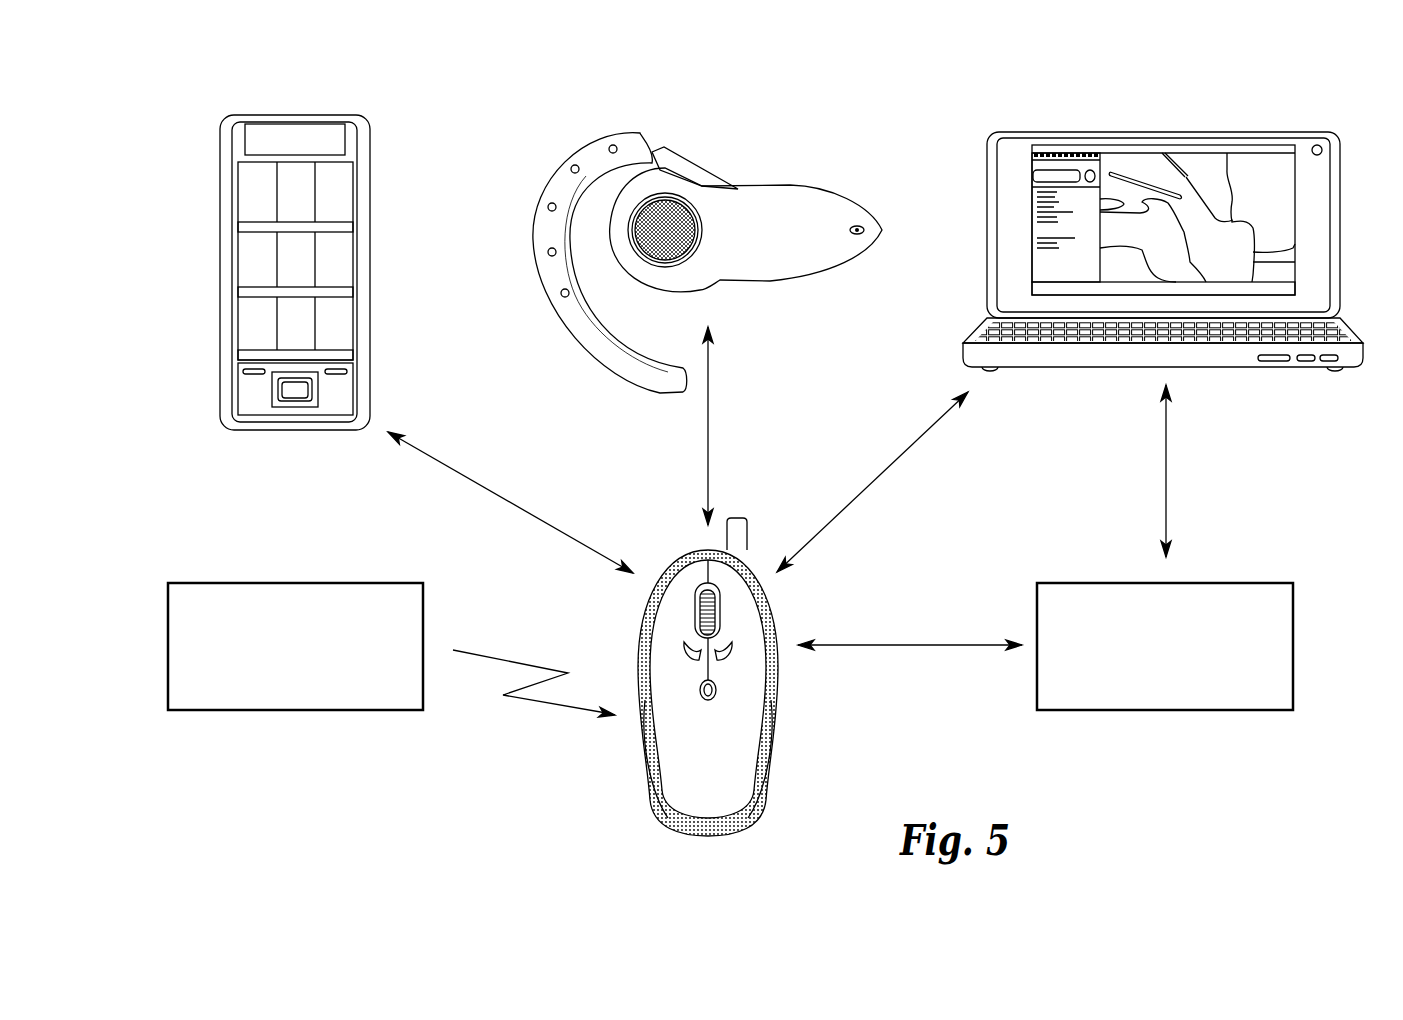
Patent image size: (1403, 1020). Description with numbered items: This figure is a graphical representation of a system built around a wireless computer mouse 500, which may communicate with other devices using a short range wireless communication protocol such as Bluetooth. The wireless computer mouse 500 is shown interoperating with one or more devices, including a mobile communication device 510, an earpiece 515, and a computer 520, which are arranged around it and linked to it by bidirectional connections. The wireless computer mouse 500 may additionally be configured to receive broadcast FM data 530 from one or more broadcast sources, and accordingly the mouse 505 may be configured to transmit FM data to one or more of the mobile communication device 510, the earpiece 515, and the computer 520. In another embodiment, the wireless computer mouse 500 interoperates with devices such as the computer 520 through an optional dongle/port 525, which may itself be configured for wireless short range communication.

The wireless computer mouse 500 is at (1118, 95).
The mouse 505 is at (772, 757).
The mobile communication device 510 is at (268, 432).
The earpiece 515 is at (772, 283).
The computer 520 is at (1277, 370).
The dongle/port 525 is at (1222, 712).
The broadcast FM data 530 is at (358, 712).